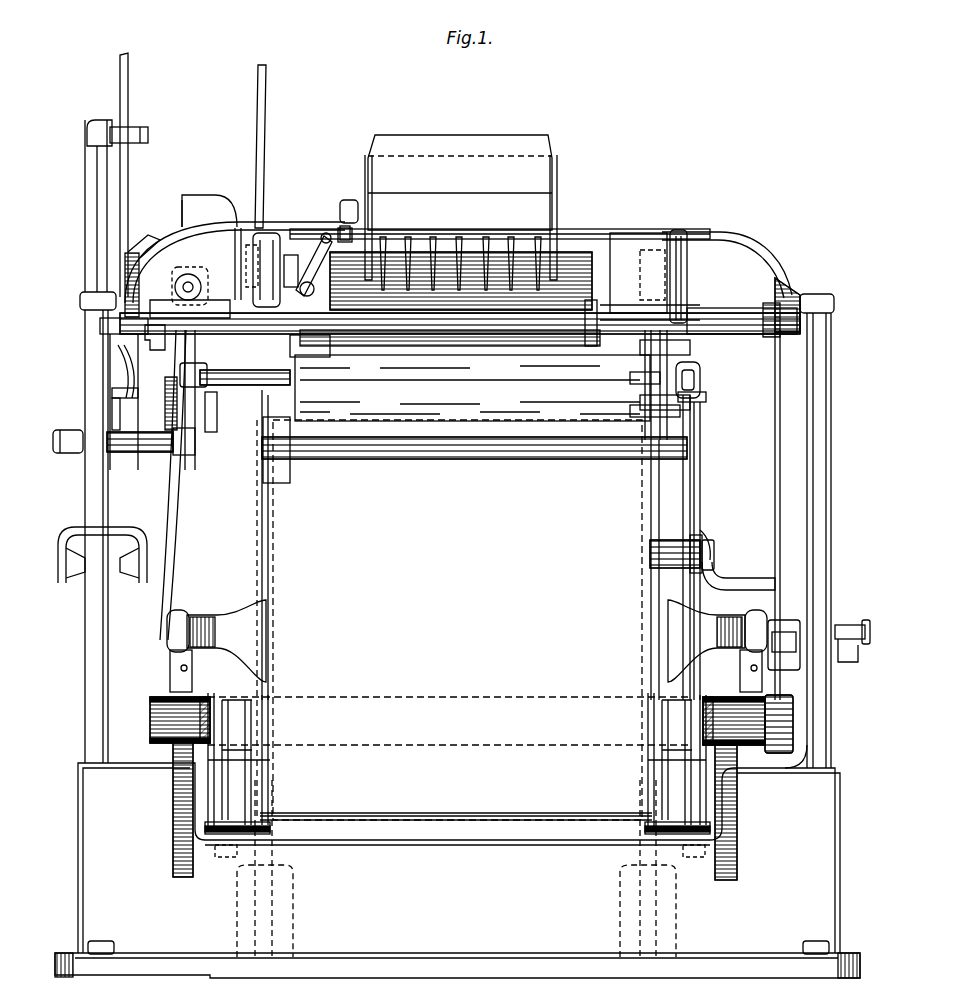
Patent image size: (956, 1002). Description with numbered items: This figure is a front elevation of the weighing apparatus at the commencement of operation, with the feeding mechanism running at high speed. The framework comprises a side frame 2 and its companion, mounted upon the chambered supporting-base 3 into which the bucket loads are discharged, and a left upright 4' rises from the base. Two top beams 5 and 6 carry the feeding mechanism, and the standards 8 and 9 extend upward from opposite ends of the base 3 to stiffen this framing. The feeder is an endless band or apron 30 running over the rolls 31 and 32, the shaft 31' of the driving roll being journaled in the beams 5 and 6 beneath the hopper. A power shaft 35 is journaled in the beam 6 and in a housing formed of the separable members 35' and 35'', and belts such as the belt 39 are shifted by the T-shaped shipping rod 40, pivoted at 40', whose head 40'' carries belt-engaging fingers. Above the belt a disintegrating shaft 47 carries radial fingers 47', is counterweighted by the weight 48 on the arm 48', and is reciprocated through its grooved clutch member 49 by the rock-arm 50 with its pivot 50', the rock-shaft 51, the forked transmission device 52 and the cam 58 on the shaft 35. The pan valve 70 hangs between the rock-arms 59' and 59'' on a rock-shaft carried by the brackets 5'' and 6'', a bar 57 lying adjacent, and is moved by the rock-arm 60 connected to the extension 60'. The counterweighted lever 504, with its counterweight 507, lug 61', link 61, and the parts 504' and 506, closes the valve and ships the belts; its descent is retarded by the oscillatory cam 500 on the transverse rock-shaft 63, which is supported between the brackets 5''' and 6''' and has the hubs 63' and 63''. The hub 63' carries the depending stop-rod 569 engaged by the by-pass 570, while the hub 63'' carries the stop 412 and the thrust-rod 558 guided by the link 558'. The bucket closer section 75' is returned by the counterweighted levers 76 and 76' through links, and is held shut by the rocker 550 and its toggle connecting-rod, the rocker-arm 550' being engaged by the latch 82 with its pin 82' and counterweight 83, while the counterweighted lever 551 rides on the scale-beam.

The side frame 2 is at (831, 492).
The chambered supporting-base 3 is at (457, 870).
The left upright 4' is at (104, 527).
The beam 5 is at (727, 251).
The arm or bracket 5'' is at (648, 385).
The bracket or arm 5''' is at (800, 289).
The beam 6 is at (269, 243).
The post part 6'' is at (278, 274).
The bracket or arm 6''' is at (104, 336).
The support or standard 8 is at (659, 520).
The support or standard 9 is at (261, 553).
The endless band or apron 30 is at (446, 252).
The roll 31 is at (650, 255).
The shaft 31' is at (663, 263).
The roll 32 is at (580, 322).
The power or pulley-supporting shaft 35 is at (190, 269).
The housing member 35' is at (161, 201).
The housing member 35'' is at (206, 192).
The belt 39 is at (128, 108).
The T-shaped belt-shipping rod 40 is at (81, 206).
The pivot 40' is at (102, 568).
The transverse portion or head 40'' is at (105, 121).
The shaft 47 is at (500, 213).
The radial bars or fingers 47' is at (460, 245).
The weight 48 is at (374, 195).
The arm 48' is at (375, 220).
The peripherally-grooved clutch member 49 is at (320, 245).
The rock-arm 50 is at (312, 264).
The pivot 50' is at (314, 279).
The rock-shaft 51 is at (300, 334).
The bifurcated or forked transmission device 52 is at (240, 242).
The bar 57 is at (652, 408).
The cam or eccentric 58 is at (133, 268).
The rock-arm 59' is at (628, 390).
The rock-arm 59'' is at (265, 374).
The rock-arm 60 is at (433, 406).
The hub or extension 60' is at (219, 387).
The link 61 is at (98, 402).
The upwardly-extending lug or ear 61' is at (97, 392).
The transverse rock-shaft 63 is at (460, 348).
The hub 63' is at (186, 296).
The hub 63'' is at (742, 305).
The valve 70 is at (472, 388).
The closer plate or section 75' is at (456, 840).
The counterweighted lever 76 is at (695, 870).
The counterweighted lever 76' is at (217, 864).
The latch 82 is at (676, 566).
The laterally-projecting pin 82' is at (738, 566).
The counterweight 83 is at (716, 546).
The stop 412 is at (704, 384).
The oscillatory cam 500 is at (148, 452).
The lever 504 is at (87, 414).
The block 504' is at (190, 435).
The bearing 506 is at (150, 456).
The counterweight 507 is at (160, 330).
The rocker 550 is at (722, 551).
The rocker-arm 550' is at (726, 520).
The counterweighted lever 551 is at (779, 755).
The connecting-rod or thrust-rod 558 is at (757, 515).
The guide or link 558' is at (764, 629).
The depending stop-rod 569 is at (163, 578).
The by-pass 570 is at (170, 668).